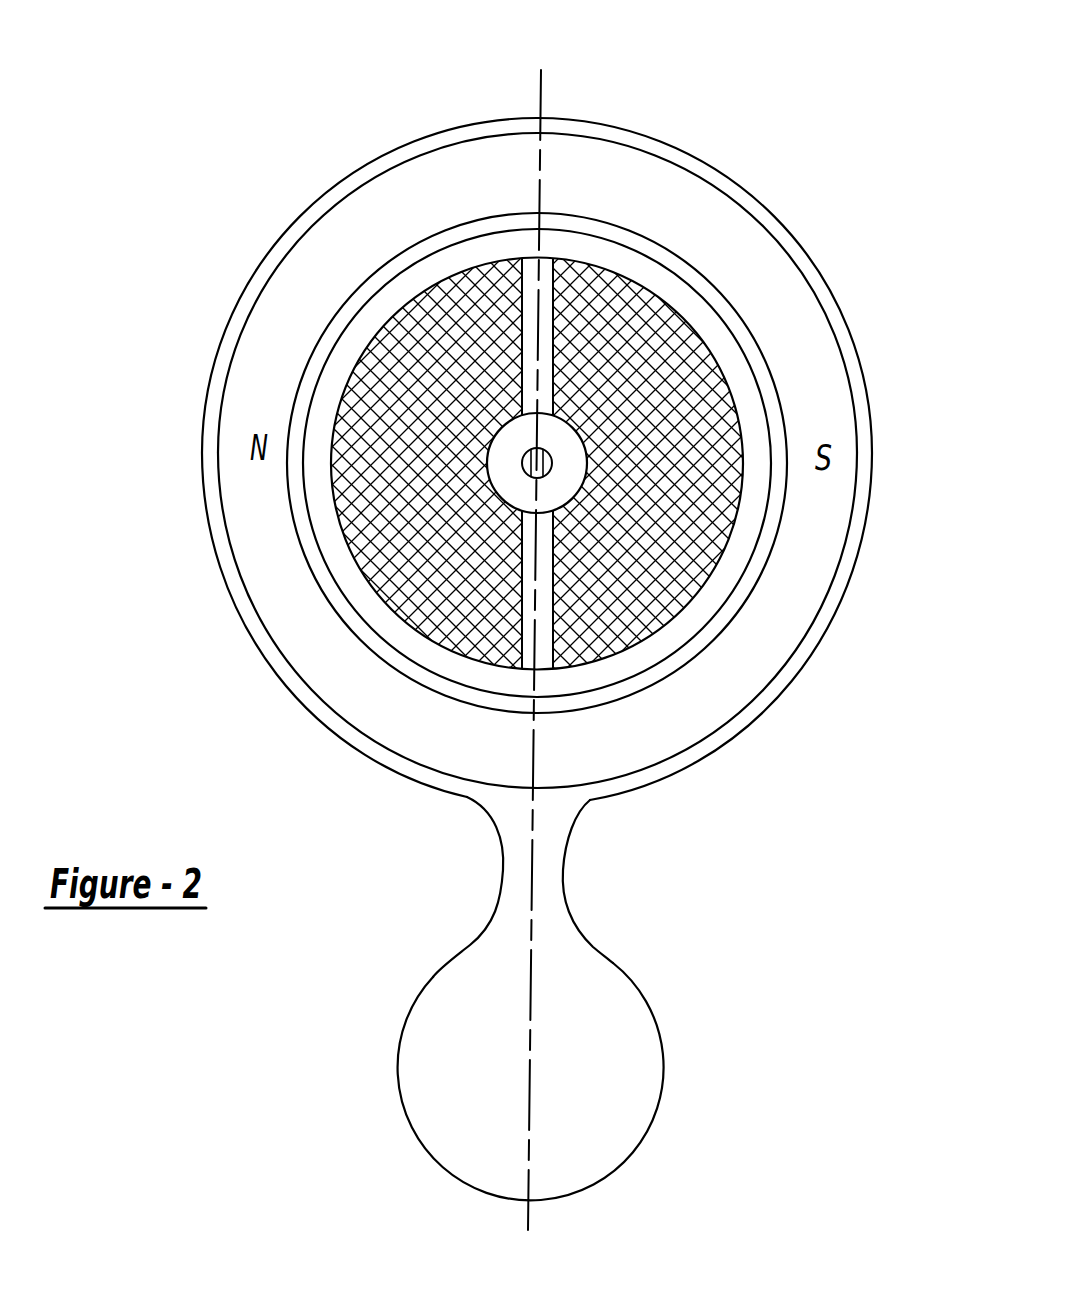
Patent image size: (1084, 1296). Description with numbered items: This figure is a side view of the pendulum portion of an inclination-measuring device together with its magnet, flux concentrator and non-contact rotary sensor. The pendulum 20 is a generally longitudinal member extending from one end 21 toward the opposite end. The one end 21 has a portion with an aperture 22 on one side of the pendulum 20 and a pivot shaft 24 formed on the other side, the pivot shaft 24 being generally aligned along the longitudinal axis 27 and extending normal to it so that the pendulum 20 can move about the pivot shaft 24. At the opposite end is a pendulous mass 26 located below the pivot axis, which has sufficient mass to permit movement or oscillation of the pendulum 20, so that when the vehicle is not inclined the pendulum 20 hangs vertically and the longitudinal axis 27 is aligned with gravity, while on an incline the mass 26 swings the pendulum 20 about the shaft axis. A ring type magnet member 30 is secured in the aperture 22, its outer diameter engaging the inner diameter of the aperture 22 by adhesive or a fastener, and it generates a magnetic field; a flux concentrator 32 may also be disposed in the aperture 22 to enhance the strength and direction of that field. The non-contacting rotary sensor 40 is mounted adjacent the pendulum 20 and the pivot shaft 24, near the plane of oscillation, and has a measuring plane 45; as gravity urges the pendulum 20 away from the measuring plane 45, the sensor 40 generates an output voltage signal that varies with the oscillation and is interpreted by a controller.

The pendulum 20 is at (636, 886).
The one end 21 is at (547, 120).
The aperture 22 is at (765, 232).
The pivot shaft 24 is at (520, 480).
The pendulous mass 26 is at (663, 1070).
The longitudinal axis 27 is at (538, 87).
The magnet member 30 is at (803, 353).
The flux concentrator 32 is at (616, 596).
The rotary sensor 40 is at (552, 457).
The measuring plane 45 is at (540, 568).